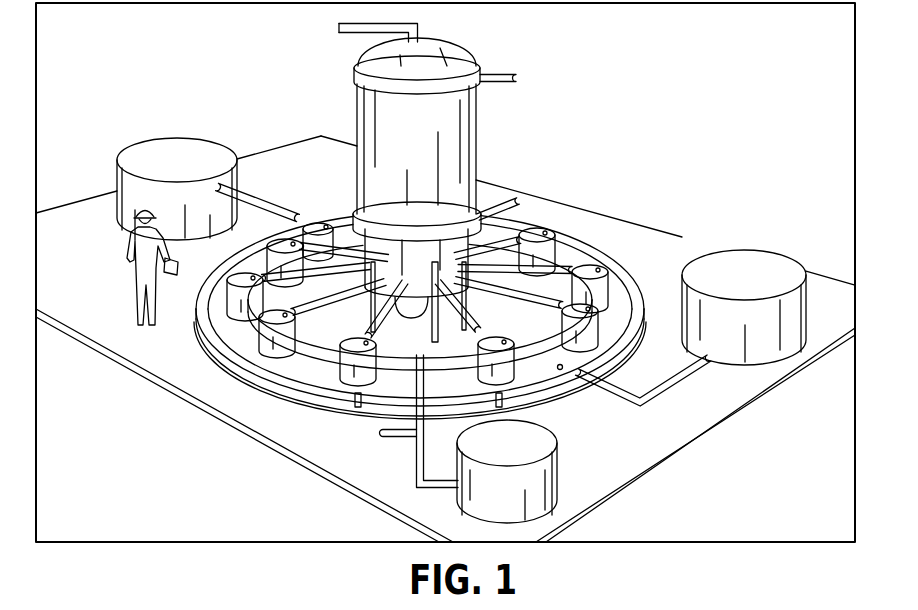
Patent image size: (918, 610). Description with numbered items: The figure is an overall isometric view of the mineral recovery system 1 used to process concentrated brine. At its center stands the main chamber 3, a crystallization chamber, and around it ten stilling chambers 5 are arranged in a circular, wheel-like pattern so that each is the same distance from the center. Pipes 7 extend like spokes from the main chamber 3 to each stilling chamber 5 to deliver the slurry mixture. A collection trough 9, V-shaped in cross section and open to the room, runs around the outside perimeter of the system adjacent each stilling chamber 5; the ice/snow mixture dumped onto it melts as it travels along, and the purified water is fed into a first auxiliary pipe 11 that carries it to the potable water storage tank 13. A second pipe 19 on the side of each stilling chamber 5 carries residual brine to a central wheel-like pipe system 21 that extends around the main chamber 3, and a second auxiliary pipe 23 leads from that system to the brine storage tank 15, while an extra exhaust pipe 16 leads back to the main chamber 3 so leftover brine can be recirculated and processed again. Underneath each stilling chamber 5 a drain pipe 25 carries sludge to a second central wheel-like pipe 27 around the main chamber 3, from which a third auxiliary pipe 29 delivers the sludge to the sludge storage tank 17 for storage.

The mineral recovery system 1 is at (140, 78).
The main chamber 3 is at (478, 115).
The stilling chambers 5 is at (262, 333).
The pipes 7 is at (336, 230).
The collection trough 9 is at (620, 262).
The first auxiliary pipe 11 is at (256, 195).
The water storage tank 13 is at (117, 160).
The brine storage tank 15 is at (563, 477).
The extra exhaust pipe 16 is at (383, 433).
The sludge storage tank 17 is at (785, 262).
The second pipe 19 is at (560, 368).
The central wheel-like pipe system 21 is at (300, 358).
The second auxiliary pipe 23 is at (416, 470).
The drain pipe 25 is at (257, 374).
The second central wheel-like pipe 27 is at (298, 407).
The third auxiliary pipe 29 is at (695, 370).